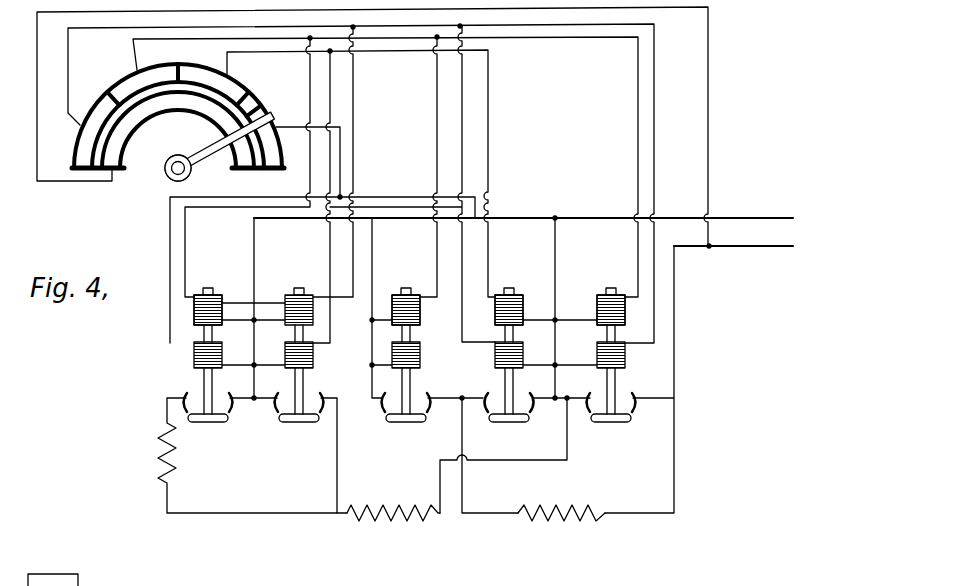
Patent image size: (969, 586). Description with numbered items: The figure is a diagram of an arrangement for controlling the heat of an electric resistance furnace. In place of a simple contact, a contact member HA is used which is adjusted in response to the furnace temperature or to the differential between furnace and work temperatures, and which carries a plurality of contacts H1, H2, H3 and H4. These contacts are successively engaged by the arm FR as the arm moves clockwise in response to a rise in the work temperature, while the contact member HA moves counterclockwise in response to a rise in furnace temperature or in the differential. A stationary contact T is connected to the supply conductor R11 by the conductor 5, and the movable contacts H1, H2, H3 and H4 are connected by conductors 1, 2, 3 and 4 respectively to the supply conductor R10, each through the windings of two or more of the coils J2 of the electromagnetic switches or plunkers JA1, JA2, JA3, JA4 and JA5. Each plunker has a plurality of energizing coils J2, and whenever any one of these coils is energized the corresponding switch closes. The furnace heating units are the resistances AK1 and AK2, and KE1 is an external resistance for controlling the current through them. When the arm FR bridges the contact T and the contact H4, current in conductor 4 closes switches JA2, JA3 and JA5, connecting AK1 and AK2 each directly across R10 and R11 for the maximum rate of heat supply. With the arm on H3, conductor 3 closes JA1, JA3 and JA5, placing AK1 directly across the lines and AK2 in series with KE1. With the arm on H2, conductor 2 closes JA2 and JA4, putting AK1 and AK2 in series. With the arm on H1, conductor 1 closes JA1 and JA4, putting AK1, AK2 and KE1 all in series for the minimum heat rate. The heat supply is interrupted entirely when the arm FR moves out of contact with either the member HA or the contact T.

The conductor 1 is at (394, 196).
The conductor 2 is at (384, 51).
The conductor 3 is at (534, 38).
The conductor 4 is at (528, 24).
The conductor 5 is at (708, 60).
The movable contact H1 is at (258, 168).
The movable contact H2 is at (214, 90).
The movable contact H3 is at (130, 90).
The movable contact H4 is at (95, 140).
The contact member HA is at (256, 172).
The switch arm FR is at (210, 143).
The stationary contact T is at (120, 143).
The supply conductor R10 is at (760, 208).
The supply conductor R11 is at (732, 248).
The energizing coil J2 is at (246, 303).
The electromagnetic switch JA1 is at (236, 424).
The electromagnetic switch JA2 is at (300, 425).
The electromagnetic switch JA3 is at (406, 424).
The electromagnetic switch JA4 is at (506, 423).
The electromagnetic switch JA5 is at (617, 424).
The external regulating resistance KE1 is at (158, 448).
The resistance heating unit AK1 is at (575, 482).
The resistance heating unit AK2 is at (408, 507).